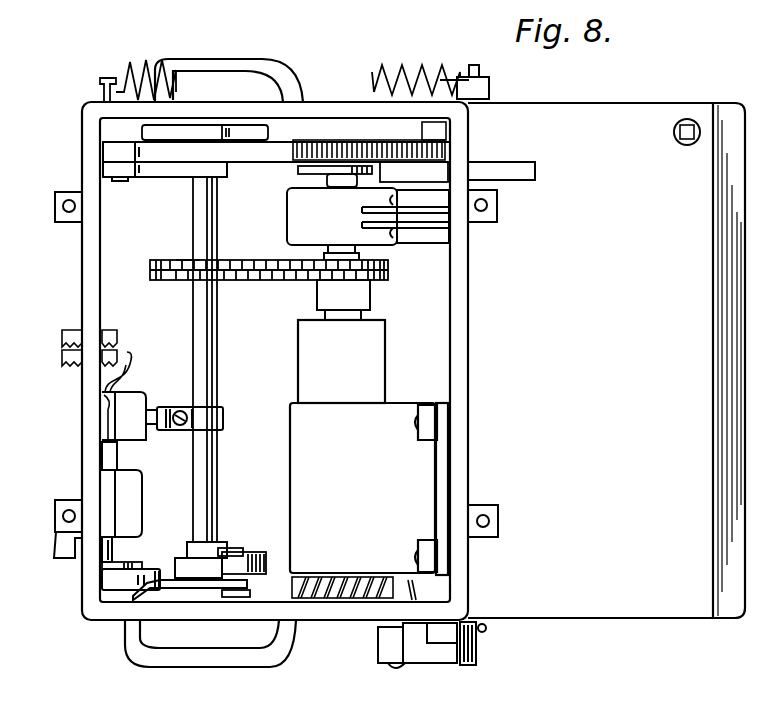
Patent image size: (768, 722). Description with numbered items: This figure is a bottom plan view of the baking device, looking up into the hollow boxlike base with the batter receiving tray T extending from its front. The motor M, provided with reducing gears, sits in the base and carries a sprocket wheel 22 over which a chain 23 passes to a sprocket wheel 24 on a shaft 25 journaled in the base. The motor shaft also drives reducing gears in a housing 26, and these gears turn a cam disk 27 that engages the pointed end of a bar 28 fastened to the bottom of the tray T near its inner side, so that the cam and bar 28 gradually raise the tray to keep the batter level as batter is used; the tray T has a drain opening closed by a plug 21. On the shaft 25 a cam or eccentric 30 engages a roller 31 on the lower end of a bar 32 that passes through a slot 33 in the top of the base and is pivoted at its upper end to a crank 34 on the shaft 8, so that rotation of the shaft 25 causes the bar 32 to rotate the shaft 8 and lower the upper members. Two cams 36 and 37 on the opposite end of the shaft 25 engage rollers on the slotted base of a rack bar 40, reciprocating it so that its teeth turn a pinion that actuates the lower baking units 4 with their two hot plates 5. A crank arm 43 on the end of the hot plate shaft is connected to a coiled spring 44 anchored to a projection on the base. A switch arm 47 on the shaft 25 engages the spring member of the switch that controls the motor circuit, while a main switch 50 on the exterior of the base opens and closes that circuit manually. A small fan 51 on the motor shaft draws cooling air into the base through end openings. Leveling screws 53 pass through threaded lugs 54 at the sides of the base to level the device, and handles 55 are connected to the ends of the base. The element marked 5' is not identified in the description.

The batter receiving tray T is at (593, 622).
The plug 21 is at (687, 122).
The bar 28 is at (515, 170).
The leveling screws 53 is at (489, 521).
The lugs 54 is at (497, 507).
The handles 55 is at (205, 58).
The coiled spring 44 is at (400, 68).
The crank arm 43 is at (489, 90).
The cam 36 is at (193, 132).
The cam 37 is at (164, 178).
The rack bar 40 is at (371, 140).
The cam disk 27 is at (300, 170).
The housing 26 is at (287, 220).
The sprocket wheel 22 is at (398, 276).
The chain 23 is at (283, 282).
The sprocket wheel 24 is at (183, 251).
The shaft 25 is at (208, 338).
The motor M is at (369, 447).
The fan 51 is at (337, 598).
The main switch 50 is at (484, 632).
The hot plates 5 is at (133, 431).
The switch arm 47 is at (184, 408).
The block 5' is at (134, 503).
The slot 33 is at (150, 560).
The shaft 8 is at (102, 566).
The crank 34 is at (113, 585).
The cam or eccentric 30 is at (210, 556).
The roller 31 is at (250, 560).
The bar 32 is at (185, 590).
The lower baking units 4 is at (92, 634).